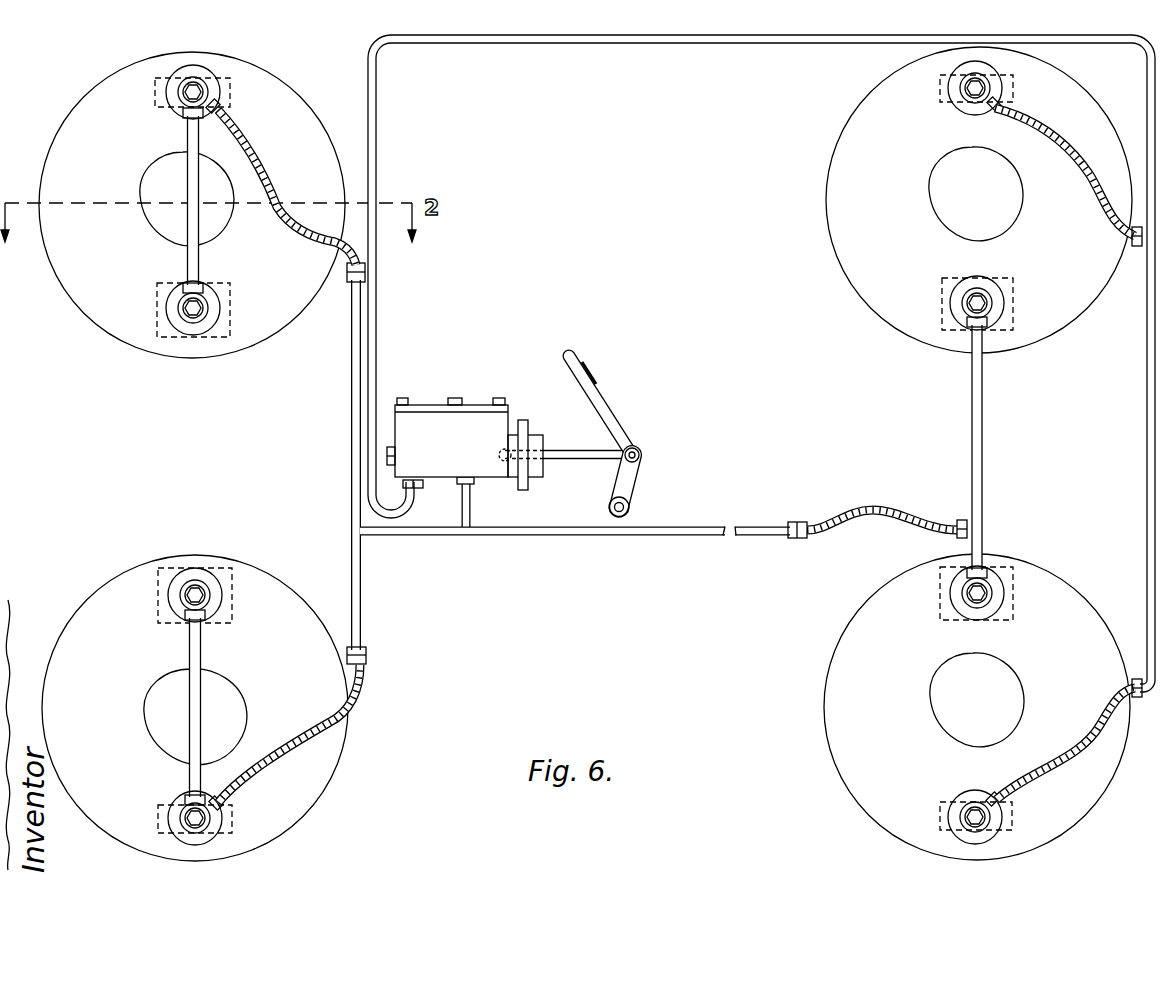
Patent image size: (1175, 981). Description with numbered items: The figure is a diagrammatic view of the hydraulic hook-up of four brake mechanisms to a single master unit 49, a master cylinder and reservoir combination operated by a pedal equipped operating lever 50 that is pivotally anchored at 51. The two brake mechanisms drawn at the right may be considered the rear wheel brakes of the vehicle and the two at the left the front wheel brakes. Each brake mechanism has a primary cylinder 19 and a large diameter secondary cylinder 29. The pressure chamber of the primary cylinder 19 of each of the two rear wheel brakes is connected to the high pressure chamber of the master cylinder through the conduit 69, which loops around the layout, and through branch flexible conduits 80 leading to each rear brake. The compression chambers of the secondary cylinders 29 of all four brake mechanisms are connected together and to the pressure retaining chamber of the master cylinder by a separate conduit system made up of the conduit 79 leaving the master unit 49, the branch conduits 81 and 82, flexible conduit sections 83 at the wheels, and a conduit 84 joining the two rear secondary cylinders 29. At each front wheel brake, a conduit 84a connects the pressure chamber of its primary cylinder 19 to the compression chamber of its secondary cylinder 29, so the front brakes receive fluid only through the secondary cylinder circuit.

The primary cylinder 19 is at (231, 93).
The secondary cylinder 29 is at (232, 300).
The master cylinder and reservoir combination 49 is at (488, 484).
The pedal equipped operating lever 50 is at (609, 436).
The pivotal anchor 51 is at (631, 506).
The conduit 69 is at (378, 342).
The conduit 79 is at (462, 510).
The branch flexible conduits 80 is at (1107, 223).
The branch conduit 81 is at (561, 530).
The branch conduit 82 is at (352, 508).
The flexible conduit sections 83 is at (268, 166).
The conduit 84 is at (983, 420).
The conduits 84a is at (201, 266).